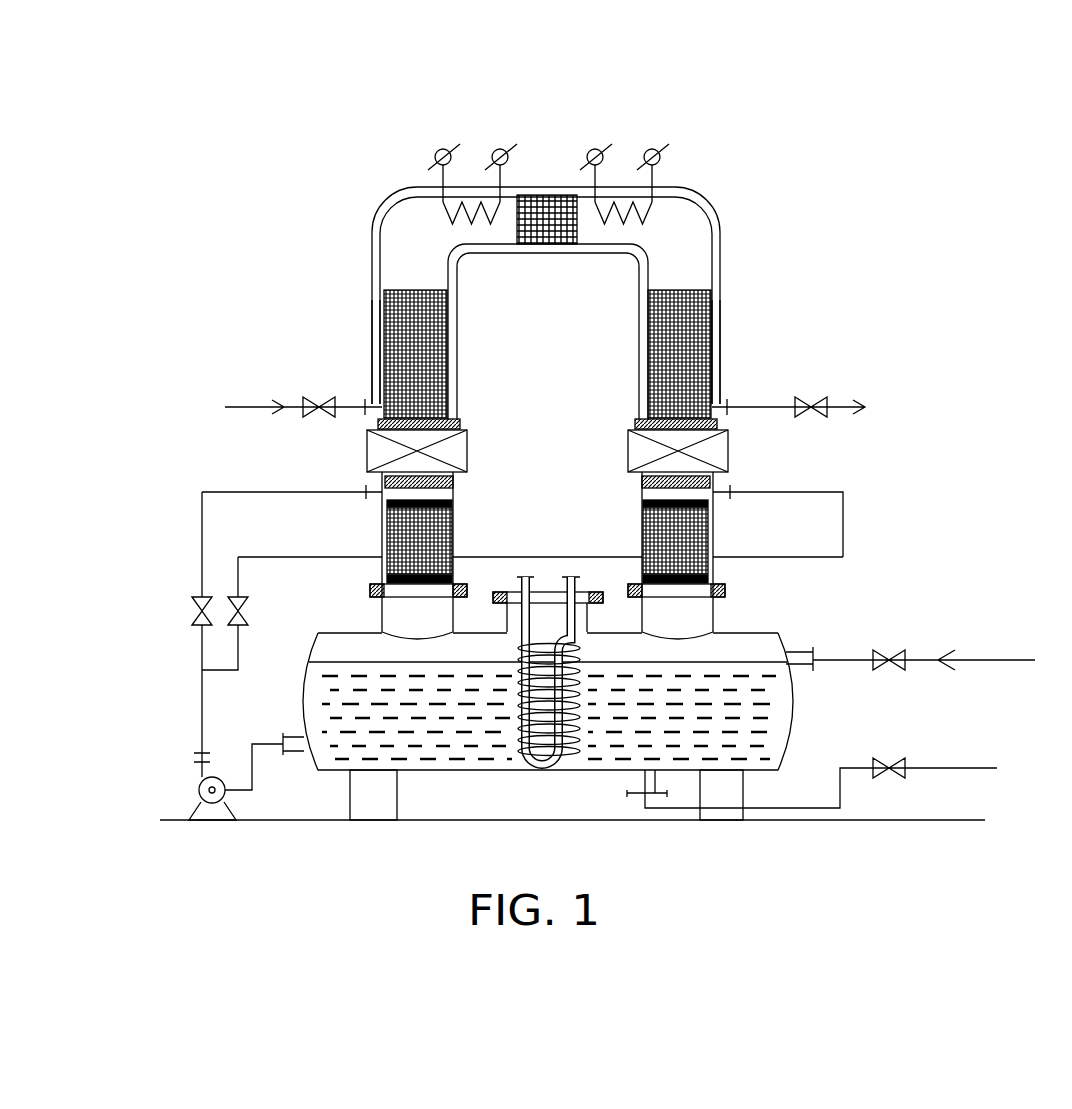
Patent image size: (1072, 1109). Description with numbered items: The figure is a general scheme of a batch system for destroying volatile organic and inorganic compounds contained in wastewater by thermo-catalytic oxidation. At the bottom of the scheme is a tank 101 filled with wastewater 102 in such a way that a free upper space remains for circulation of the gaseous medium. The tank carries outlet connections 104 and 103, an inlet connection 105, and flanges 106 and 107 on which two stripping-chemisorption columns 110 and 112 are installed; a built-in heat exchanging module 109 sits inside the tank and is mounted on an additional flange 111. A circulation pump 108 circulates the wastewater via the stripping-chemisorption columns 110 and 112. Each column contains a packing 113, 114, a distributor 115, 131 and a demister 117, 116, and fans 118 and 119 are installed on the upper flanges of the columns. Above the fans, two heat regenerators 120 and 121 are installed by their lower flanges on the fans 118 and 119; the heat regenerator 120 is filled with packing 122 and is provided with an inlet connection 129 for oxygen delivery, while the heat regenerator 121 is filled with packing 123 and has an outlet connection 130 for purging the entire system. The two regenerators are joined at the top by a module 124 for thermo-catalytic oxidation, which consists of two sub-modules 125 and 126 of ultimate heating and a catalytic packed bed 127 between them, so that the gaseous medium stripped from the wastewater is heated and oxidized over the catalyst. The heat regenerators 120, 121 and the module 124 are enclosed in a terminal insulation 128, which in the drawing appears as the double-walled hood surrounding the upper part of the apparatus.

The tank 101 is at (777, 632).
The wastewater 102 is at (767, 737).
The outlet connection 103 is at (283, 737).
The outlet connection 104 is at (627, 784).
The inlet connection 105 is at (813, 653).
The flange 106 is at (313, 557).
The flange 107 is at (723, 587).
The circulation pump 108 is at (200, 786).
The built-in heat exchanging module 109 is at (503, 750).
The stripping-chemisorption column 110 is at (717, 518).
The additional flange 111 is at (500, 600).
The stripping-chemisorption column 112 is at (382, 528).
The packing 113 is at (453, 518).
The packing 114 is at (642, 531).
The distributor 115 is at (382, 485).
The demister 116 is at (642, 490).
The demister 117 is at (468, 448).
The fan 118 is at (628, 443).
The fan 119 is at (469, 438).
The heat regenerator 120 is at (722, 303).
The heat regenerator 121 is at (376, 306).
The packing 122 is at (384, 344).
The packing 123 is at (714, 344).
The module for thermo-catalytic oxidation 124 is at (536, 142).
The sub-module of ultimate heating 125 is at (446, 213).
The sub-module of ultimate heating 126 is at (652, 221).
The catalytic packed bed 127 is at (540, 246).
The terminal insulation 128 is at (672, 187).
The inlet connection 129 is at (368, 406).
The outlet connection 130 is at (727, 405).
The distributor 131 is at (693, 502).